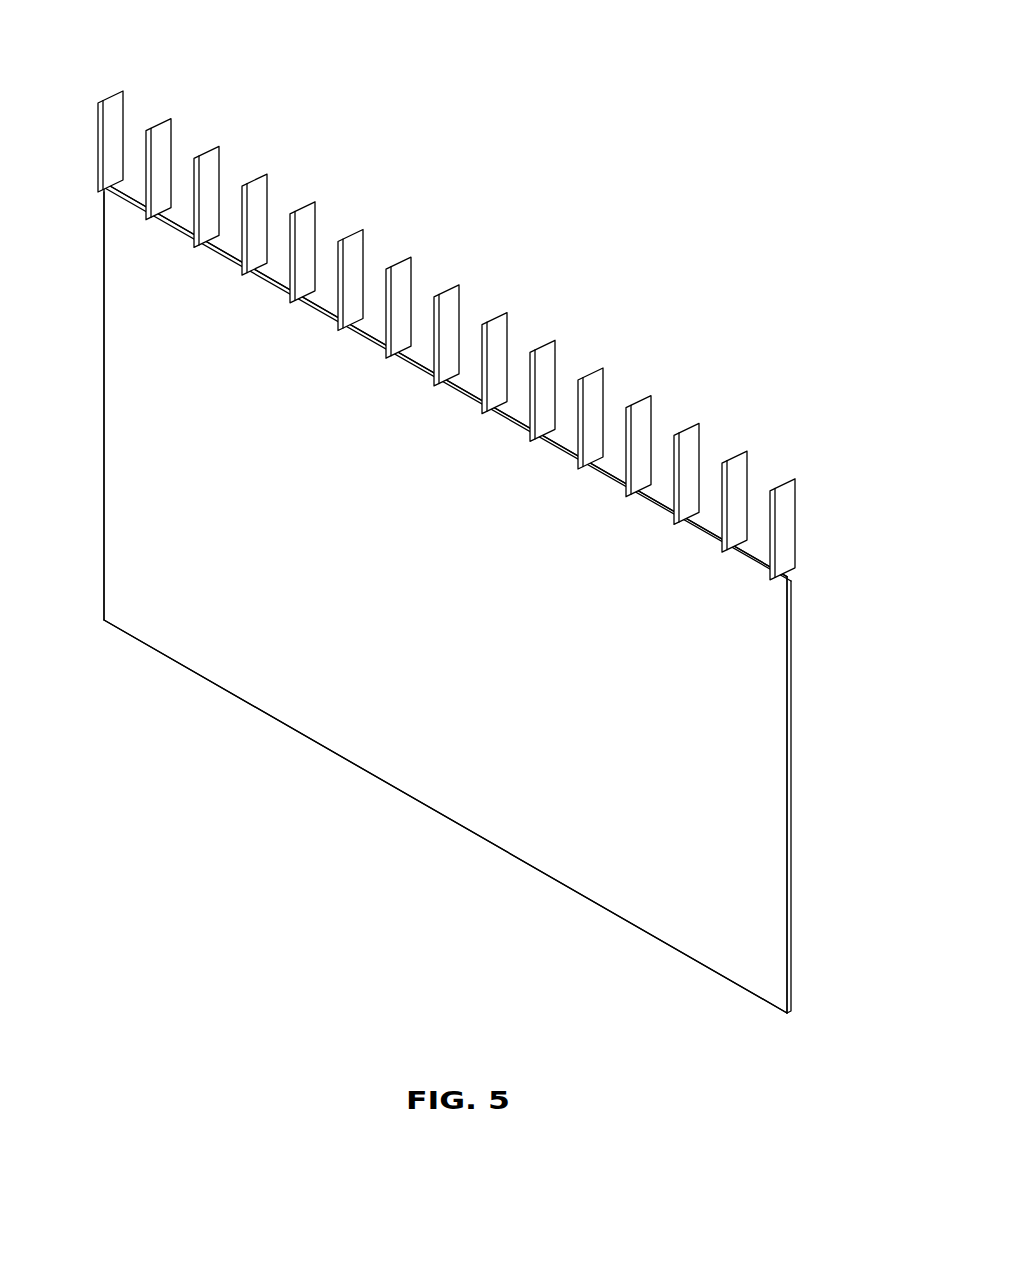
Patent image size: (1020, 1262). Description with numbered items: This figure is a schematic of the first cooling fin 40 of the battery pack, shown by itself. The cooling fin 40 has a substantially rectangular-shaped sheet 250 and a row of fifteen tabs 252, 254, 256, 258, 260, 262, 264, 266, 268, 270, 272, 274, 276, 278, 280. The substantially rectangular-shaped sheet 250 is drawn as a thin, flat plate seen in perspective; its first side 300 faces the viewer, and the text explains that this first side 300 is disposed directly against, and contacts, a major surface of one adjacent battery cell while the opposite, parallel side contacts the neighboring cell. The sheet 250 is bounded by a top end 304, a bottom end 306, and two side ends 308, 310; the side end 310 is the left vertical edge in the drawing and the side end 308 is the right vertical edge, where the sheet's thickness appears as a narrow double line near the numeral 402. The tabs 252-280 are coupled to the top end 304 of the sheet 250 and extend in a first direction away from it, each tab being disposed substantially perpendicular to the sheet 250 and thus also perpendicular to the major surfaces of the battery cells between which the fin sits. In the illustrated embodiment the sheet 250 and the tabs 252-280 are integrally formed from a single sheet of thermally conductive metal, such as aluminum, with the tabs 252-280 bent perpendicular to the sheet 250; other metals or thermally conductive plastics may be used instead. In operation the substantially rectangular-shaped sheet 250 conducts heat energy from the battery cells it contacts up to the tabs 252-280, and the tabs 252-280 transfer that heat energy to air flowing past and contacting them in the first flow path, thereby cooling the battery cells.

The cooling fin 40 is at (568, 218).
The substantially rectangular-shaped sheet 250 is at (470, 614).
The tab 252 is at (799, 487).
The tab 254 is at (751, 459).
The tab 256 is at (703, 431).
The tab 258 is at (655, 404).
The tab 260 is at (607, 376).
The tab 262 is at (559, 348).
The tab 264 is at (511, 321).
The tab 266 is at (463, 293).
The tab 268 is at (415, 265).
The tab 270 is at (367, 238).
The tab 272 is at (319, 210).
The tab 274 is at (271, 182).
The tab 276 is at (223, 154).
The tab 278 is at (175, 127).
The tab 280 is at (127, 99).
The first side 300 is at (703, 947).
The top end 304 is at (757, 552).
The bottom end 306 is at (563, 887).
The side end 308 is at (792, 690).
The side end 310 is at (104, 430).
The side surface of plate 402 is at (792, 942).